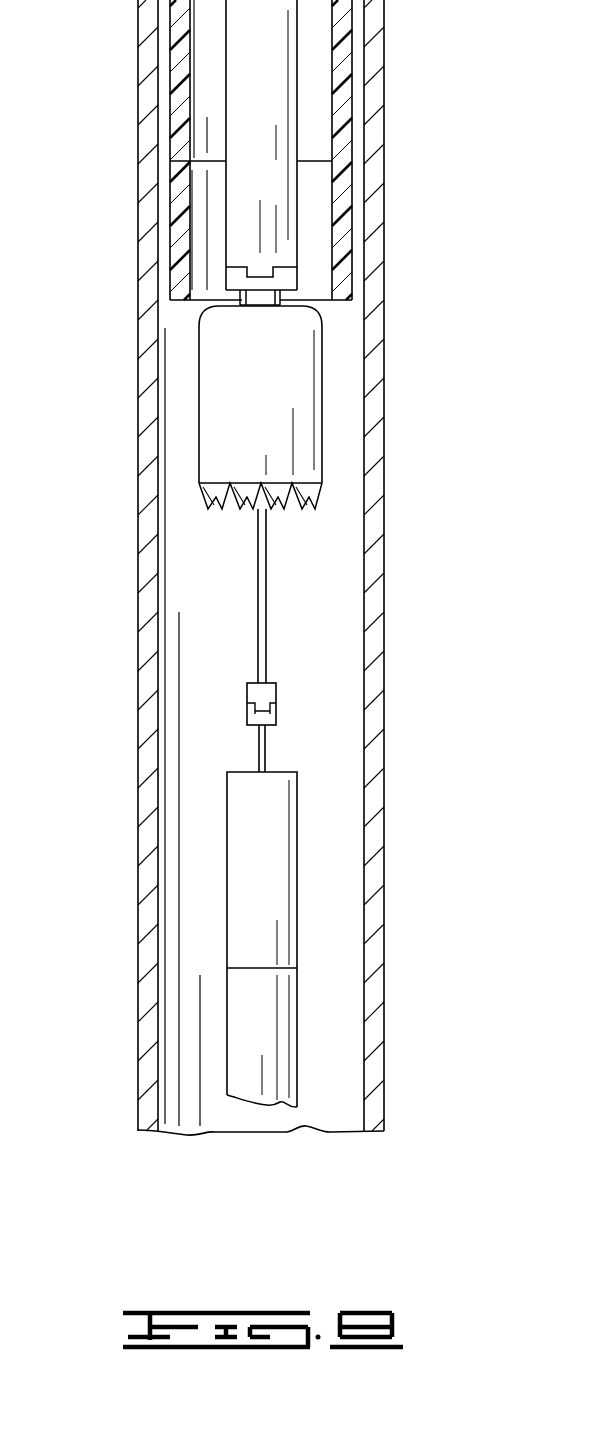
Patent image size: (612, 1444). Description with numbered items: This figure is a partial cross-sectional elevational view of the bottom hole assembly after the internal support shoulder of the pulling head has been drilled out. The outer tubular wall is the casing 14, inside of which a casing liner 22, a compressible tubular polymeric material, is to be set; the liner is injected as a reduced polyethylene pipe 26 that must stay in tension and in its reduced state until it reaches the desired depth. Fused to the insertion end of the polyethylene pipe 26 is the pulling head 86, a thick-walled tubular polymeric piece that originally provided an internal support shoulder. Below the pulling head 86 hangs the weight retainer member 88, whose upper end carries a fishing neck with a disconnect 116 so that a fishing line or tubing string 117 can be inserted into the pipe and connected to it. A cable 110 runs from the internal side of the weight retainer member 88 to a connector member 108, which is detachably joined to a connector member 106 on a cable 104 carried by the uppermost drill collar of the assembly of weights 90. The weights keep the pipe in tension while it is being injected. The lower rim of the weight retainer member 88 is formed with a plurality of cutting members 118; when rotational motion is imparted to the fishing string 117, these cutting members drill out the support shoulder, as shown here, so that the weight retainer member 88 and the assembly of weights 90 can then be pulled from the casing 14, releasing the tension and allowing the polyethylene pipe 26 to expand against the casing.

The casing 14 is at (140, 526).
The casing liner 22 is at (178, 53).
The polyethylene pipe 26 is at (342, 74).
The pulling head 86 is at (180, 225).
The weight retainer member 88 is at (288, 387).
The assembly of weights 90 is at (270, 825).
The cable 104 is at (262, 748).
The connector member 106 is at (247, 717).
The connector member 108 is at (265, 692).
The cable 110 is at (258, 563).
The disconnect 116 is at (293, 278).
The fishing line or tubing string 117 is at (248, 131).
The cutting members 118 is at (320, 502).